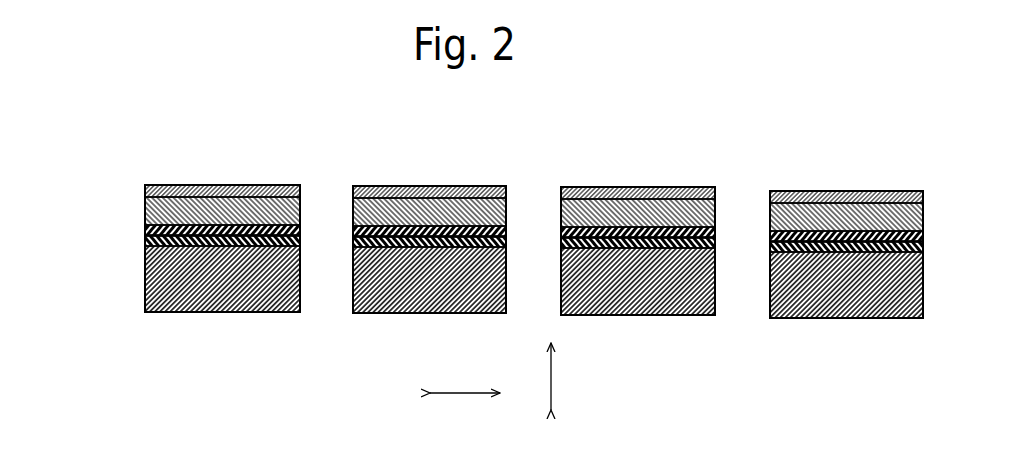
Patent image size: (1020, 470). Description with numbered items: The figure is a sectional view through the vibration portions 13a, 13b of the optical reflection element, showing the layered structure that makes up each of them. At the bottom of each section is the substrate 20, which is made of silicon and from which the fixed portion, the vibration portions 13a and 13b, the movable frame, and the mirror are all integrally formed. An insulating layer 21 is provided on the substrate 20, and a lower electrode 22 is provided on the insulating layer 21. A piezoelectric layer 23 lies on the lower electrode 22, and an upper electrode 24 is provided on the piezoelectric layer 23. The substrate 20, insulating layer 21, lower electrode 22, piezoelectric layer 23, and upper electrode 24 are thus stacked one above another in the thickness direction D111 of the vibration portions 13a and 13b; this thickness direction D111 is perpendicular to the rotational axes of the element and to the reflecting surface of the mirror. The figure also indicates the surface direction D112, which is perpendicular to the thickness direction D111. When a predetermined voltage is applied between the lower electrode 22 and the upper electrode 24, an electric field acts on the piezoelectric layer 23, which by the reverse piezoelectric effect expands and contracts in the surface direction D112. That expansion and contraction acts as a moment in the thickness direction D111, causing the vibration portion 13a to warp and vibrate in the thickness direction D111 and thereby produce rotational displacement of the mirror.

The substrate 20 is at (158, 275).
The insulating layer 21 is at (150, 233).
The lower electrode 22 is at (150, 221).
The piezoelectric layer 23 is at (155, 197).
The upper electrode 24 is at (158, 178).
The vibration portion 13a is at (897, 114).
The vibration portion 13b is at (638, 251).
The thickness direction D111 is at (543, 380).
The surface direction D112 is at (462, 385).